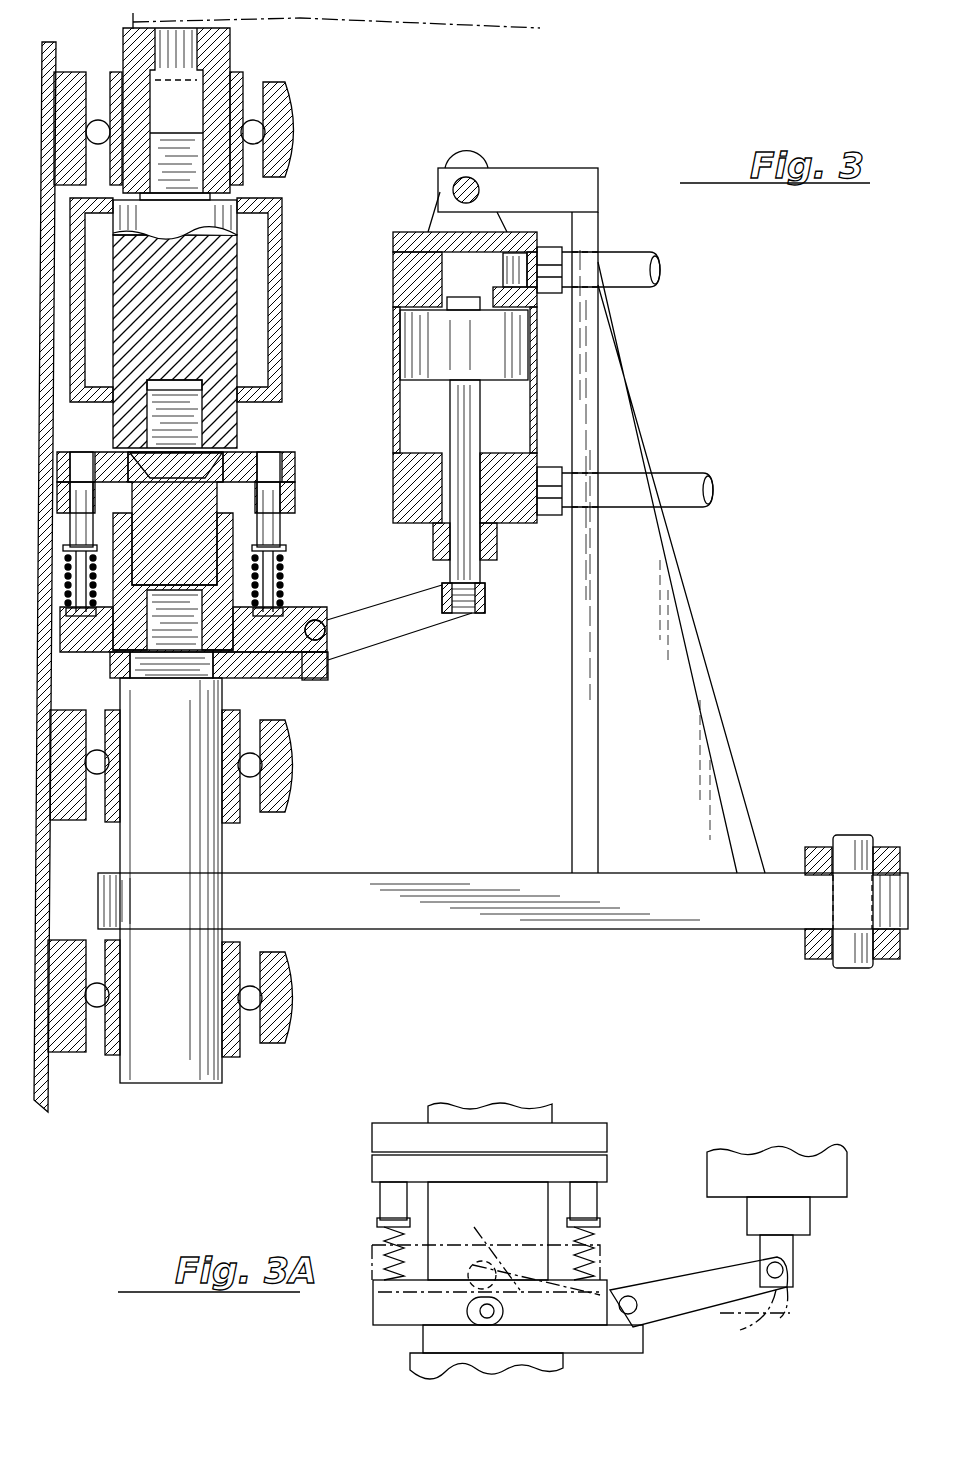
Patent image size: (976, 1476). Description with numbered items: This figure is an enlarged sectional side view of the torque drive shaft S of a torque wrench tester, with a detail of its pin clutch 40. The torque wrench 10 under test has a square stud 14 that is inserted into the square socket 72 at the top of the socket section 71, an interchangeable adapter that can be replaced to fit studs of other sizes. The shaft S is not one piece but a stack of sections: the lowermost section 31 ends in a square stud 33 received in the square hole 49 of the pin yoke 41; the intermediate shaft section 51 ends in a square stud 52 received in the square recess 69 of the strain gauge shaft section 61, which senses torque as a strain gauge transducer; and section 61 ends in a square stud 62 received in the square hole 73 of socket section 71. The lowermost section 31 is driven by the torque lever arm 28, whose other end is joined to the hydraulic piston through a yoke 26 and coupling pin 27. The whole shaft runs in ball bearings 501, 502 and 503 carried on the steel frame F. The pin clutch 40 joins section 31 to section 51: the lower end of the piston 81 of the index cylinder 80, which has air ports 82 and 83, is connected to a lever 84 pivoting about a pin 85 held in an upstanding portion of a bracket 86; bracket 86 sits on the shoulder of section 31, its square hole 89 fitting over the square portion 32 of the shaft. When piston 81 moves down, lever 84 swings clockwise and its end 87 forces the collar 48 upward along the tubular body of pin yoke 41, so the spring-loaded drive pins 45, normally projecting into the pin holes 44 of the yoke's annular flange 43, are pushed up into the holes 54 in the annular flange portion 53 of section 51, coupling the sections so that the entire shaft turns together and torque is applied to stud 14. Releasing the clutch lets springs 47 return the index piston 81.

In FIG. 3, the steel frame F is at (48, 52).
In FIG. 3, the torque wrench 10 is at (378, 32).
In FIG. 3, the square stud 14 is at (173, 53).
In FIG. 3, the socket section 71 is at (215, 88).
In FIG. 3, the square socket 72 is at (195, 42).
In FIG. 3, the square hole 73 is at (200, 100).
In FIG. 3, the square stud 62 is at (187, 173).
In FIG. 3, the ball bearing 503 is at (290, 117).
In FIG. 3, the strain gauge shaft section 61 is at (212, 290).
In FIG. 3, the torque drive shaft S is at (250, 325).
In FIG. 3, the square recess 69 is at (195, 428).
In FIG. 3, the square stud 52 is at (163, 413).
In FIG. 3, the pin clutch 40 is at (215, 552).
In FIG. 3A, the pin clutch 40 is at (462, 1215).
In FIG. 3, the annular flange portion 53 is at (290, 457).
In FIG. 3A, the annular flange portion 53 is at (585, 1135).
In FIG. 3, the holes 54 is at (270, 450).
In FIG. 3, the pin holes 44 is at (298, 478).
In FIG. 3, the annular flange 43 is at (298, 490).
In FIG. 3A, the annular flange 43 is at (596, 1170).
In FIG. 3, the drive pins 45 is at (275, 530).
In FIG. 3A, the drive pins 45 is at (590, 1205).
In FIG. 3, the intermediate shaft section 51 is at (188, 540).
In FIG. 3, the pin yoke 41 is at (215, 610).
In FIG. 3A, the pin yoke 41 is at (448, 1195).
In FIG. 3, the springs 47 is at (283, 593).
In FIG. 3, the square hole 89 is at (195, 625).
In FIG. 3, the collar 48 is at (292, 635).
In FIG. 3A, the collar 48 is at (395, 1310).
In FIG. 3, the square hole 49 is at (262, 676).
In FIG. 3, the pin 85 is at (330, 625).
In FIG. 3A, the pin 85 is at (628, 1296).
In FIG. 3, the bracket 86 is at (330, 670).
In FIG. 3A, the bracket 86 is at (632, 1345).
In FIG. 3, the end of lever 87 is at (330, 655).
In FIG. 3A, the end of lever 87 is at (525, 1285).
In FIG. 3, the square stud 33 is at (112, 653).
In FIG. 3, the square portion 32 is at (172, 628).
In FIG. 3, the lowermost section 31 is at (165, 727).
In FIG. 3A, the lowermost section 31 is at (430, 1365).
In FIG. 3, the ball bearing 502 is at (292, 760).
In FIG. 3, the ball bearing 501 is at (288, 995).
In FIG. 3, the torque lever arm 28 is at (398, 900).
In FIG. 3, the coupling pin 27 is at (848, 850).
In FIG. 3, the yoke 26 is at (808, 945).
In FIG. 3, the index cylinder 80 is at (560, 392).
In FIG. 3A, the index cylinder 80 is at (808, 1140).
In FIG. 3, the piston 81 is at (440, 345).
In FIG. 3A, the piston 81 is at (795, 1250).
In FIG. 3, the port 82 is at (640, 270).
In FIG. 3, the port 83 is at (700, 485).
In FIG. 3, the lever 84 is at (413, 617).
In FIG. 3A, the lever 84 is at (718, 1278).